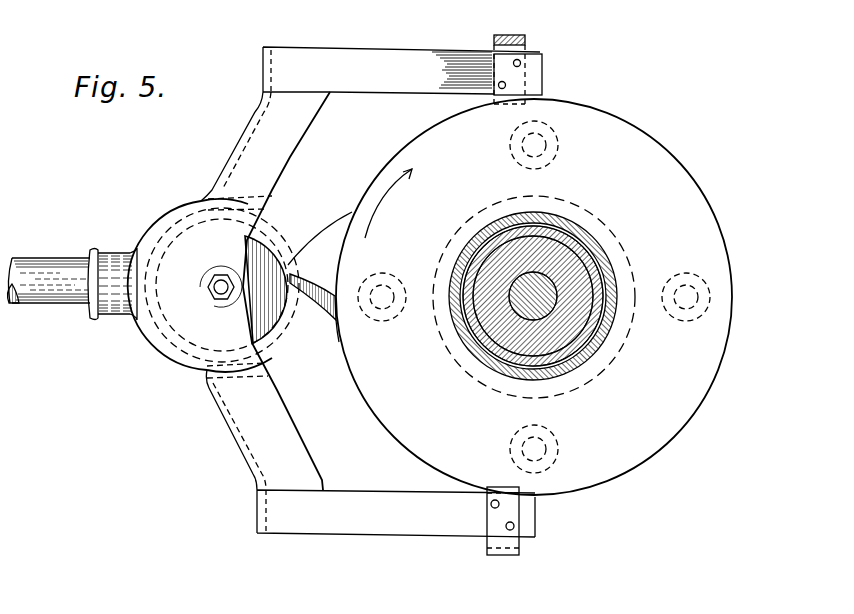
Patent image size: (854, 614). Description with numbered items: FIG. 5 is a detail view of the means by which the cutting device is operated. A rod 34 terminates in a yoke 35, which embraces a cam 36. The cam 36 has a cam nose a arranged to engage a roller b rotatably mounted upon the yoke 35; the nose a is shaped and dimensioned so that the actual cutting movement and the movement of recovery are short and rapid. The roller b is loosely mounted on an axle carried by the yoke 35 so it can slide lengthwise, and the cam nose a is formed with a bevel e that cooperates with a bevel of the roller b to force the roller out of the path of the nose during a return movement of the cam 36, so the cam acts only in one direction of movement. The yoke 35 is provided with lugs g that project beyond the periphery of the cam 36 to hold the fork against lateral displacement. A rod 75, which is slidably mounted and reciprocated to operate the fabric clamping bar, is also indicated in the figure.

The rod 34 is at (66, 263).
The yoke 35 is at (289, 158).
The cam 36 is at (416, 140).
The rod 75 is at (546, 290).
The cam nose a is at (340, 218).
The roller b is at (272, 246).
The bevel e is at (318, 294).
The lugs g is at (505, 104).